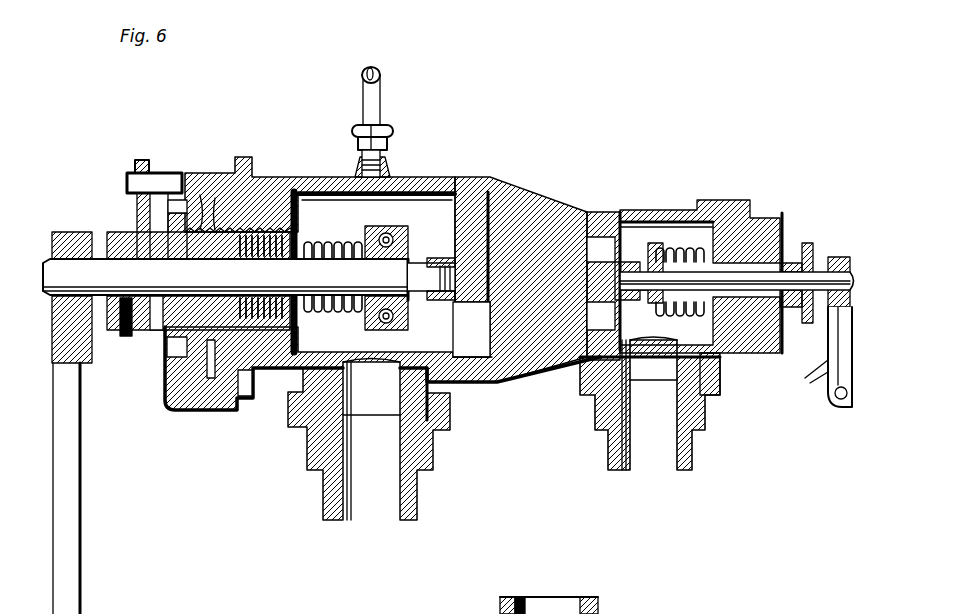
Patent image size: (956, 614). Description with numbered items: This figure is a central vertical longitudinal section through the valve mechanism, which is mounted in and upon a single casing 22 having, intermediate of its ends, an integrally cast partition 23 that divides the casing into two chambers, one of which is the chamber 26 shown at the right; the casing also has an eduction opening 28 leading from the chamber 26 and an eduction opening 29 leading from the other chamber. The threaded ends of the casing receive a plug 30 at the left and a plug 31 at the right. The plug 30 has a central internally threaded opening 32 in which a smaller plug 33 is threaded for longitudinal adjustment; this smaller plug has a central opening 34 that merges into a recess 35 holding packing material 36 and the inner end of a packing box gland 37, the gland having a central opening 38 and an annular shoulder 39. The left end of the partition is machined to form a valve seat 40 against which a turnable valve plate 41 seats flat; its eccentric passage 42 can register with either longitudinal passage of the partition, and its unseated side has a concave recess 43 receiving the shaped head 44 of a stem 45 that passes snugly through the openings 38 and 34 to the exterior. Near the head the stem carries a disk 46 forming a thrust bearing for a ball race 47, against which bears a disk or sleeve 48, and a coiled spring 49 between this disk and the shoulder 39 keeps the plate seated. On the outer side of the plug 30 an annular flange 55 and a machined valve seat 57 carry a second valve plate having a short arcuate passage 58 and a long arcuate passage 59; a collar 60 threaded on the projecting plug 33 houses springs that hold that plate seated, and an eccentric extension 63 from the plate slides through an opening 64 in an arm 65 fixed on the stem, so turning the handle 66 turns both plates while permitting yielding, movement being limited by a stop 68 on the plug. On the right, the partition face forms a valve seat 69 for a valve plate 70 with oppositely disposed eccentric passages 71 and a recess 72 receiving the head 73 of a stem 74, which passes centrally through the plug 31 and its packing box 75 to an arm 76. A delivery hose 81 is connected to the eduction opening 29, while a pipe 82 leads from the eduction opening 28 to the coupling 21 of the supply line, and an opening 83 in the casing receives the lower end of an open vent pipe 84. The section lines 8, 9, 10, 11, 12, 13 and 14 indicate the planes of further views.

The section line 8- 8 is at (368, 570).
The section line 9- 9 is at (545, 70).
The section line 10- 10 is at (648, 120).
The section line 11-11 / bolt 11 is at (189, 472).
The piston disc 12 is at (622, 265).
The bolt 13 is at (600, 276).
The section line 14- 14 is at (210, 453).
The coupling 21 is at (455, 390).
The casing 22 is at (430, 180).
The partition 23 is at (548, 215).
The chamber 26 is at (690, 210).
The eduction opening 28 is at (650, 403).
The eduction opening 29 is at (371, 440).
The plug 30 is at (292, 176).
The plug 31 is at (783, 230).
The internally threaded opening 32 is at (300, 326).
The smaller plug 33 is at (145, 330).
The central opening 34 is at (190, 262).
The recess 35 is at (230, 375).
The packing material 36 is at (218, 300).
The packing box gland 37 is at (252, 300).
The central opening 38 is at (298, 345).
The annular shoulder 39 is at (302, 232).
The valve seat 40 is at (526, 389).
The valve plate 41 is at (478, 192).
The eccentric passage 42 is at (465, 375).
The concave recess 43 is at (453, 330).
The head 44 is at (432, 300).
The stem 45 is at (372, 276).
The disk 46 is at (410, 240).
The ball race 47 is at (372, 200).
The disk or sleeve 48 is at (380, 228).
The coiled spring 49 is at (333, 313).
The annular flange 55 is at (236, 170).
The valve seat 57 is at (185, 350).
The short arcuate passage 58 is at (250, 185).
The long arcuate passage 59 is at (185, 385).
The collar 60 is at (178, 200).
The extension 63 is at (127, 183).
The opening 64 is at (138, 160).
The arm 65 is at (137, 216).
The handle 66 is at (81, 425).
The stop 68 is at (151, 442).
The valve seat 69 is at (561, 379).
The valve plate 70 is at (600, 215).
The eccentric passages 71 is at (640, 222).
The recess 72 is at (682, 262).
The head 73 is at (626, 300).
The stem 74 is at (780, 352).
The packing box 75 is at (800, 318).
The arm 76 is at (812, 380).
The delivery hose 81 is at (325, 486).
The pipe 82 is at (670, 445).
The opening 83 is at (390, 170).
The vent pipe 84 is at (375, 105).